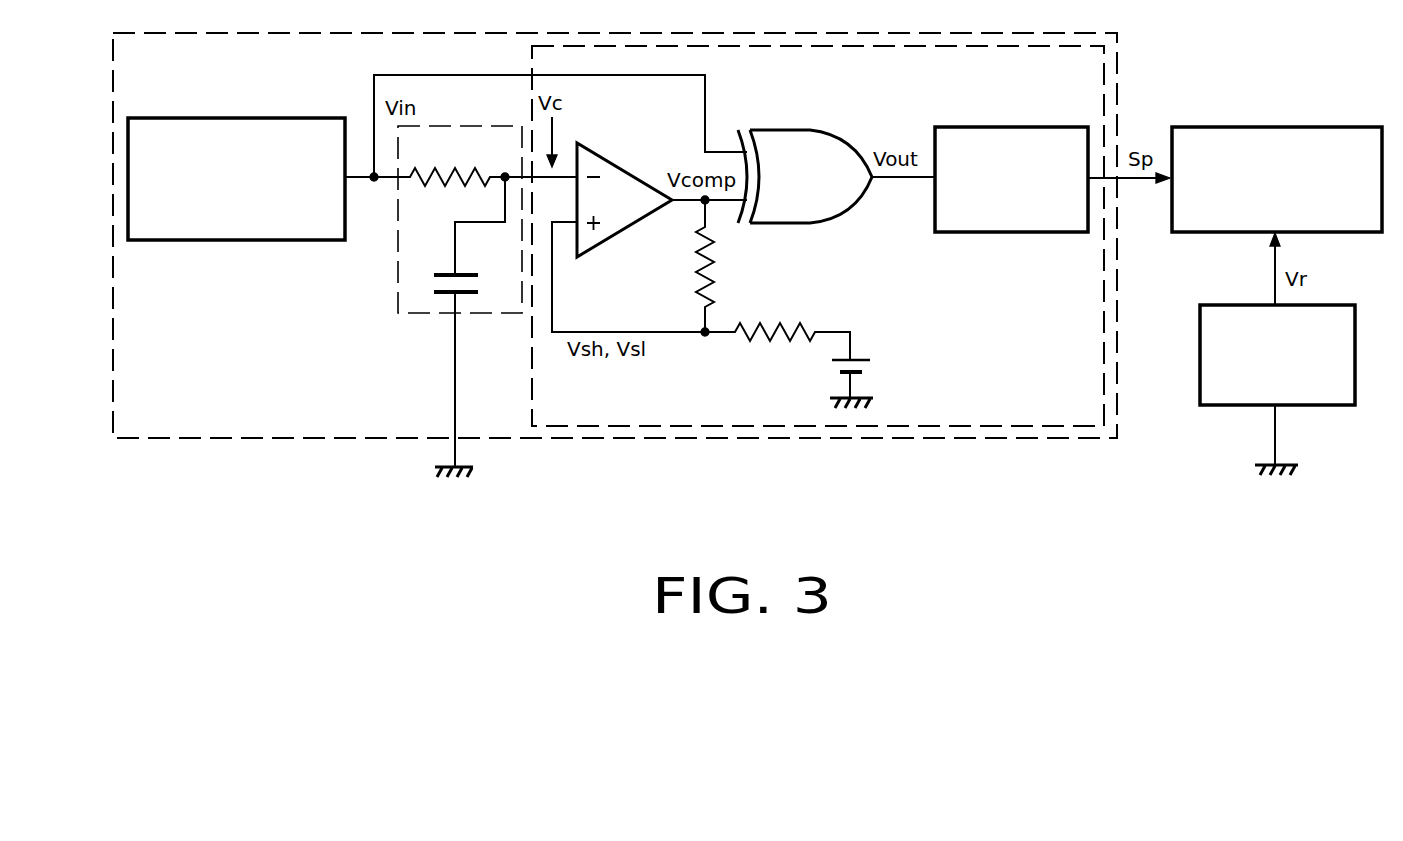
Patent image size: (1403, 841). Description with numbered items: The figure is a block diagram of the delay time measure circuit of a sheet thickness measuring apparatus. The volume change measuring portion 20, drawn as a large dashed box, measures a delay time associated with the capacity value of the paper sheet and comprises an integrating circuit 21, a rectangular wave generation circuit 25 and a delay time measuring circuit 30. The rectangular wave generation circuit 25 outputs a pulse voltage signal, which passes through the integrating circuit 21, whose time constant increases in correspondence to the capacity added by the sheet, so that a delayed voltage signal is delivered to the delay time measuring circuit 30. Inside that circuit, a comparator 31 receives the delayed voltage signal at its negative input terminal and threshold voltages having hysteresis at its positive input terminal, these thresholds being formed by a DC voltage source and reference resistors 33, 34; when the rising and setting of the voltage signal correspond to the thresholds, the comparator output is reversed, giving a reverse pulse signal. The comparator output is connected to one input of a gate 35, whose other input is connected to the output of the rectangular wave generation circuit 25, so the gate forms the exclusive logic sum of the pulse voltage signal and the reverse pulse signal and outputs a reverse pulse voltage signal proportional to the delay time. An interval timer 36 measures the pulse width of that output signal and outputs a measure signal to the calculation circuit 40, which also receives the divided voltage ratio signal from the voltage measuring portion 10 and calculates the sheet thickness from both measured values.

The voltage measuring portion 10 is at (1325, 405).
The volume change measuring portion 20 is at (338, 442).
The integrating circuit 21 is at (397, 255).
The rectangular wave generation circuit 25 is at (242, 117).
The delay time measuring circuit 30 is at (742, 428).
The comparator 31 is at (623, 168).
The reference resistor 33 is at (787, 322).
The reference resistor 34 is at (698, 282).
The gate 35 is at (788, 130).
The interval timer 36 is at (1000, 127).
The calculation circuit 40 is at (1283, 127).